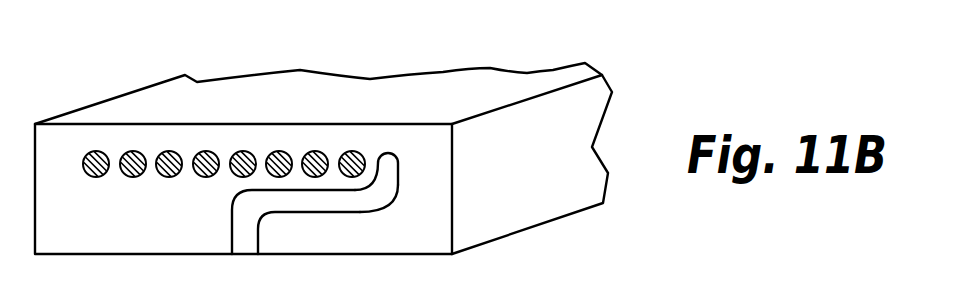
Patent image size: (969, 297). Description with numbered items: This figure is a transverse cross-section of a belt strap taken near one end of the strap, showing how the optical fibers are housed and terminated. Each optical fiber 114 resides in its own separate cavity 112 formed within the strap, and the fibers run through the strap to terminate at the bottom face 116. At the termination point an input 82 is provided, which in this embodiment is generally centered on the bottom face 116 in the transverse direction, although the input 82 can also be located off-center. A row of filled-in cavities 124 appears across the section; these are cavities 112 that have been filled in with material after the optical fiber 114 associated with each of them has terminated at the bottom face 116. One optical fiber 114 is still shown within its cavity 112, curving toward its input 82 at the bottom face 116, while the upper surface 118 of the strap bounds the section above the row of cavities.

The input 82 is at (245, 255).
The cavity 112 is at (393, 150).
The optical fiber 114 is at (385, 160).
The bottom face 116 is at (104, 255).
The top cover 118 is at (472, 88).
The filled-in cavity 124 is at (160, 153).